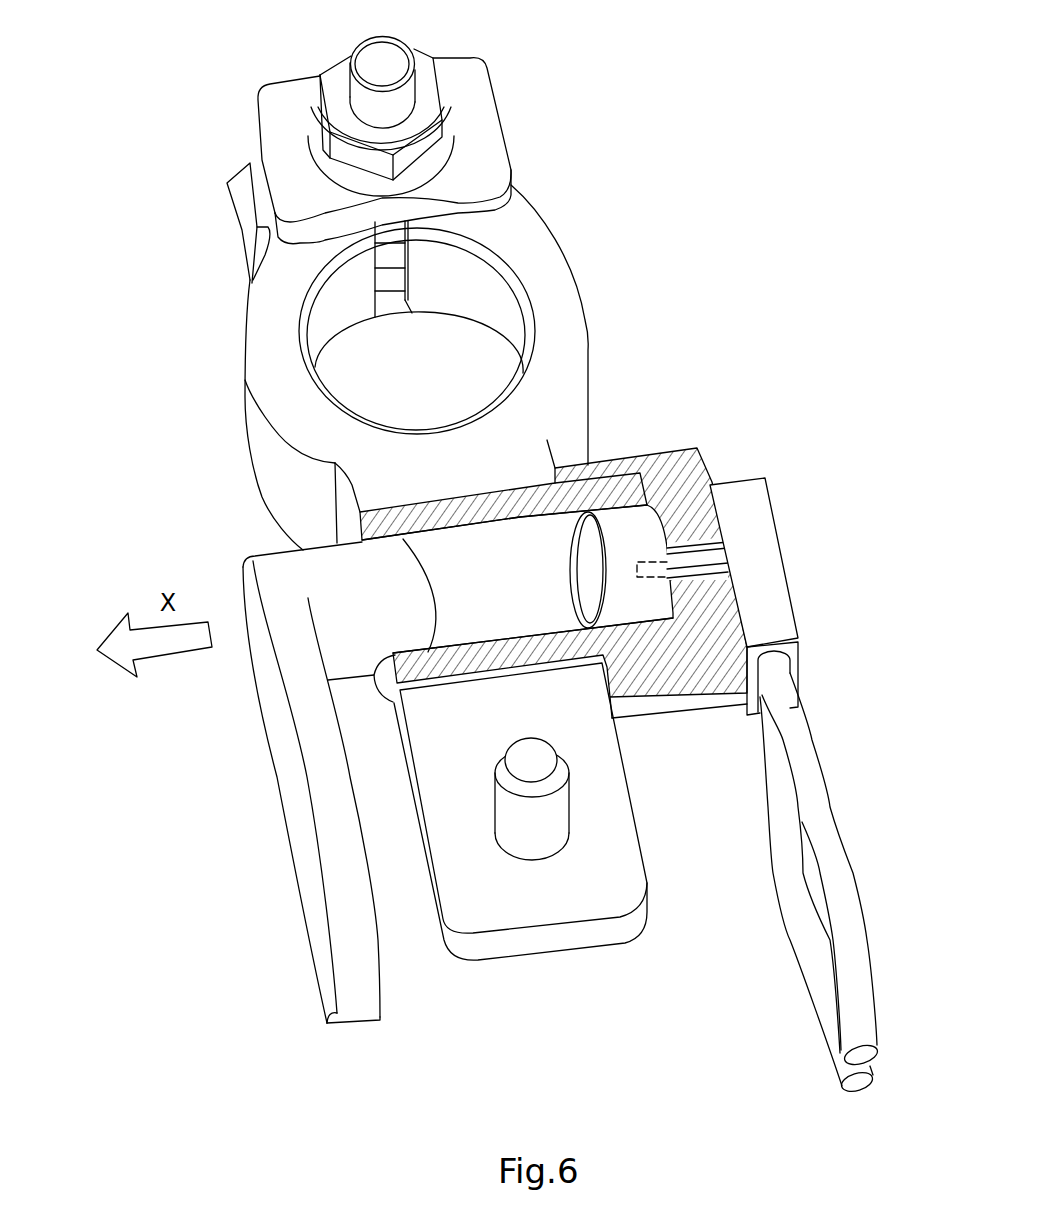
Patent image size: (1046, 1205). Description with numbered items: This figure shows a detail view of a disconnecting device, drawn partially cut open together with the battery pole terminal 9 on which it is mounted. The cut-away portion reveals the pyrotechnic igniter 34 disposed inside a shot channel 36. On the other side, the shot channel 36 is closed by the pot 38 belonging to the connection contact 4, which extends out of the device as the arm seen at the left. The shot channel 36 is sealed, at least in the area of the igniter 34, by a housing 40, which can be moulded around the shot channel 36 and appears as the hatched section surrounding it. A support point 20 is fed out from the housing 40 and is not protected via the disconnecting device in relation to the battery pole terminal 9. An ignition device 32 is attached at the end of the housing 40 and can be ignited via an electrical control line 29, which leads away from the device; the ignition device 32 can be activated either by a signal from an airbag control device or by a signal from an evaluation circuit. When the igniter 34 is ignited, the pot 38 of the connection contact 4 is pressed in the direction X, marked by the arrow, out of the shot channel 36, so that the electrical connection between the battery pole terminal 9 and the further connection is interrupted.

The connection contact 4 is at (281, 577).
The battery pole terminal 9 is at (548, 265).
The support point 20 is at (550, 812).
The electrical control line 29 is at (828, 841).
The ignition device 32 is at (760, 543).
The pyrotechnic igniter 34 is at (614, 534).
The shot channel 36 is at (483, 597).
The pot 38 is at (407, 558).
The housing 40 is at (677, 468).